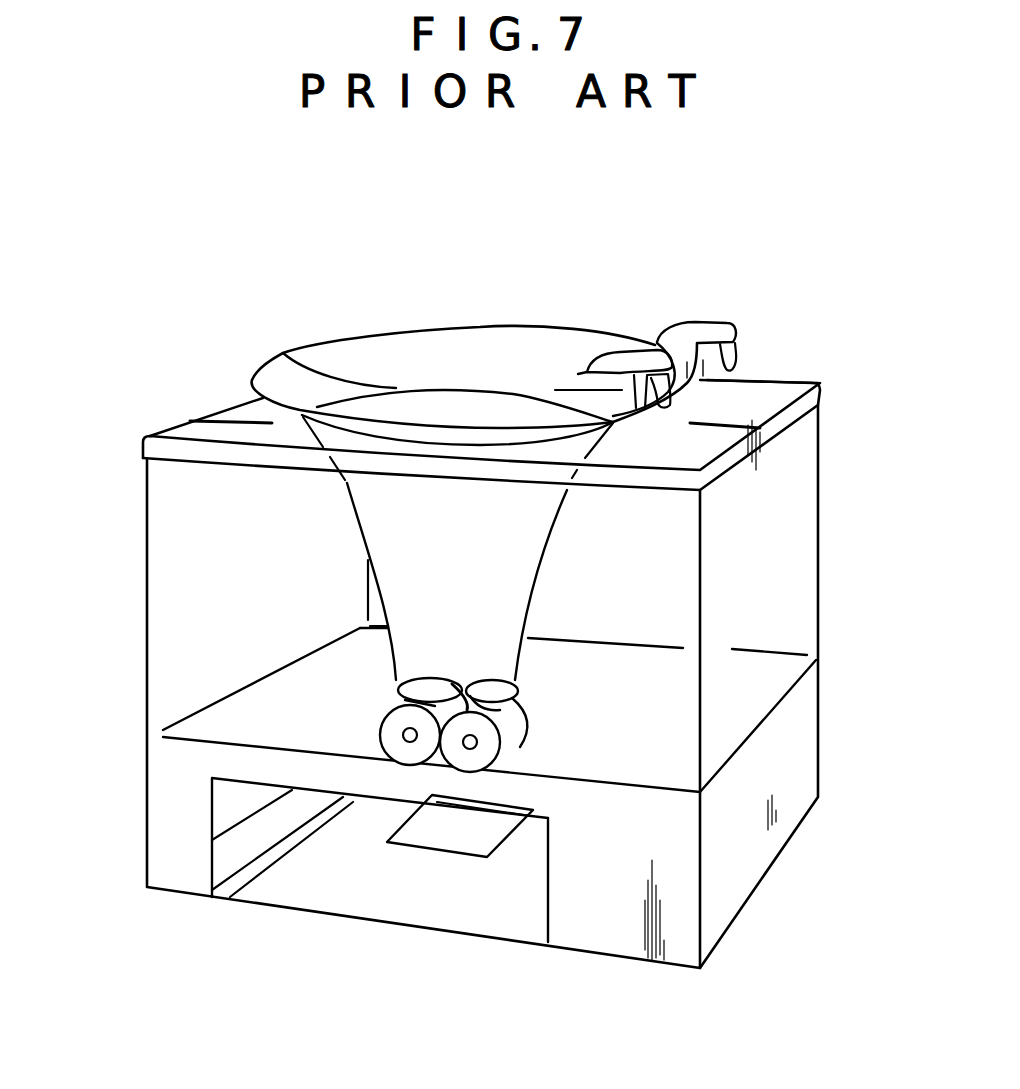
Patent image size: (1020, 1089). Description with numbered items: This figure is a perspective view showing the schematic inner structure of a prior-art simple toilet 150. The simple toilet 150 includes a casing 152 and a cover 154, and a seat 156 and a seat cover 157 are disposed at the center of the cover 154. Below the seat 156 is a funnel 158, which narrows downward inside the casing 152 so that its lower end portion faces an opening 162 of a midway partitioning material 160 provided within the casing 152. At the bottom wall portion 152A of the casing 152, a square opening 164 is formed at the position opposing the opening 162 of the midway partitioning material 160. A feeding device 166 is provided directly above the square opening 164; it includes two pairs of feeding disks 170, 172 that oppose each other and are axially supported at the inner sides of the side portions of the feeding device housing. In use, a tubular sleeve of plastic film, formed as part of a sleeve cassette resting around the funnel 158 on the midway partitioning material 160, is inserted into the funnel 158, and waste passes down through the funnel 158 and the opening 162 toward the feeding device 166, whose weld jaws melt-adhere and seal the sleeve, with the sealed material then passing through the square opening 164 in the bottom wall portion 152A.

The simple toilet 150 is at (596, 290).
The casing 152 is at (146, 616).
The bottom wall portion 152A is at (462, 912).
The cover 154 is at (770, 393).
The seat 156 is at (262, 378).
The seat cover 157 is at (423, 327).
The funnel 158 is at (368, 565).
The midway partitioning material 160 is at (760, 720).
The opening 162 is at (467, 681).
The square opening 164 is at (432, 836).
The feeding device 166 is at (538, 742).
The feeding disks 170 is at (530, 700).
The feeding disks 172 is at (425, 693).